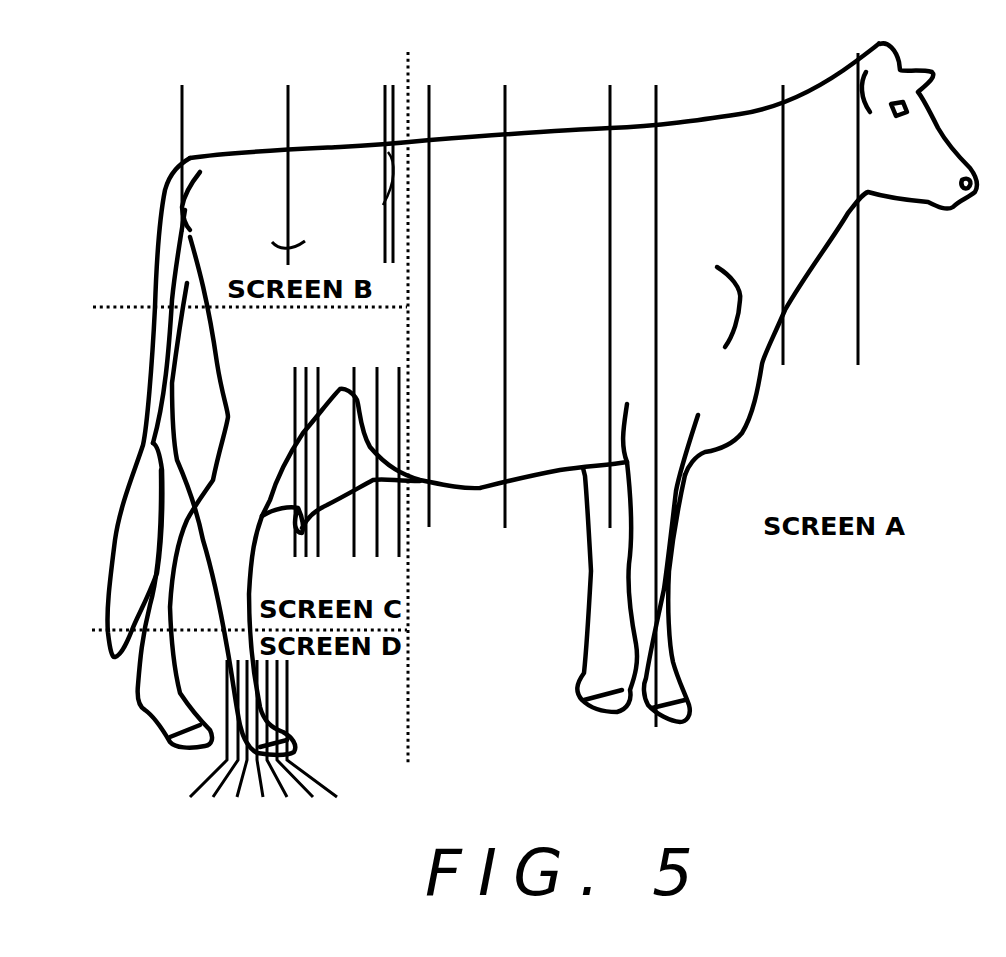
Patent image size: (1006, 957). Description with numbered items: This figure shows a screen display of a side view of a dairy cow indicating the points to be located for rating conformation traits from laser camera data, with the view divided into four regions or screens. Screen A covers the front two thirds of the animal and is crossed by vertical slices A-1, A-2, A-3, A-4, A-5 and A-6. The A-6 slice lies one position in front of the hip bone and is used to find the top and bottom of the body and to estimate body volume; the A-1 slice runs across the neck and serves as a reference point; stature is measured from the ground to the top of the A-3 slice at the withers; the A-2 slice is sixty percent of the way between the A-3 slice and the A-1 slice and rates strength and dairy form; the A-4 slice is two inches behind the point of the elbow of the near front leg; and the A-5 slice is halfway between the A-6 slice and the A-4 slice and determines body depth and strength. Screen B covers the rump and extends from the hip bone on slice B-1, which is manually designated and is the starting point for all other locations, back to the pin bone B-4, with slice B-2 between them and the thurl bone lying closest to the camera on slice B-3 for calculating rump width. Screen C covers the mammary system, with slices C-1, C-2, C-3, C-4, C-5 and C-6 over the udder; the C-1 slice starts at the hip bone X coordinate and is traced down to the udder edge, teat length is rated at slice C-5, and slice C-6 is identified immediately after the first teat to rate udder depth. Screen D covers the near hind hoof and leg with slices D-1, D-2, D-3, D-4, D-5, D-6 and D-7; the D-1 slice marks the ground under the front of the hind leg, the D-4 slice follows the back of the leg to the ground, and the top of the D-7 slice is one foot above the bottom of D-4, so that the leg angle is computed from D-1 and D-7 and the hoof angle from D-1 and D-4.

The A-1 slice A-1 is at (856, 238).
The A-2 slice A-2 is at (783, 197).
The A-3 slice A-3 is at (657, 378).
The A-4 slice A-4 is at (611, 279).
The A-5 slice A-5 is at (506, 279).
The A-6 slice A-6 is at (431, 278).
The B-1 slice B-1 is at (395, 146).
The B-2 slice B-2 is at (378, 146).
The B-3 slice B-3 is at (288, 147).
The pin bone B-4 is at (181, 131).
The C-1 slice C-1 is at (398, 434).
The C-2 slice C-2 is at (375, 434).
The C-3 slice C-3 is at (352, 434).
The C-4 slice C-4 is at (329, 434).
The C-5 slice C-5 is at (306, 434).
The C-6 slice C-6 is at (283, 434).
The D-1 slice D-1 is at (319, 756).
The D-2 slice D-2 is at (302, 756).
The D-3 slice D-3 is at (284, 756).
The D-4 slice D-4 is at (263, 756).
The D-5 slice D-5 is at (237, 756).
The D-6 slice D-6 is at (219, 756).
The D-7 slice D-7 is at (201, 756).